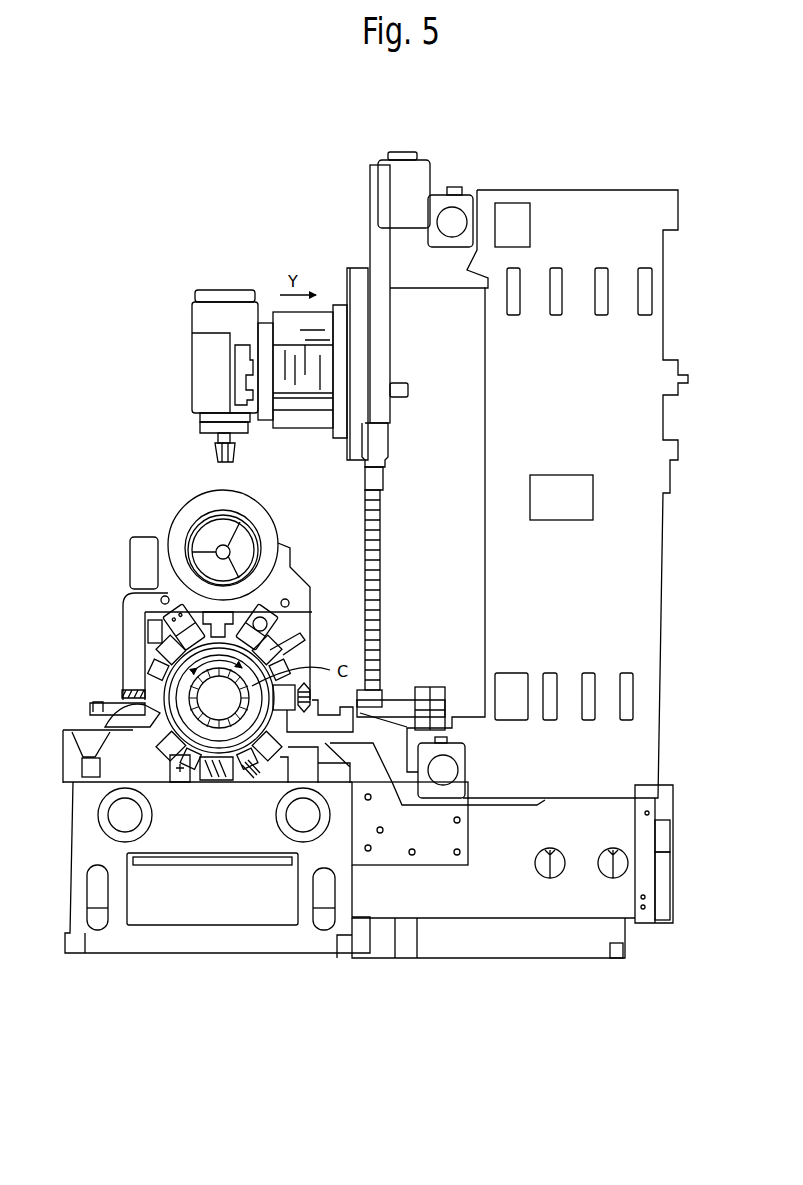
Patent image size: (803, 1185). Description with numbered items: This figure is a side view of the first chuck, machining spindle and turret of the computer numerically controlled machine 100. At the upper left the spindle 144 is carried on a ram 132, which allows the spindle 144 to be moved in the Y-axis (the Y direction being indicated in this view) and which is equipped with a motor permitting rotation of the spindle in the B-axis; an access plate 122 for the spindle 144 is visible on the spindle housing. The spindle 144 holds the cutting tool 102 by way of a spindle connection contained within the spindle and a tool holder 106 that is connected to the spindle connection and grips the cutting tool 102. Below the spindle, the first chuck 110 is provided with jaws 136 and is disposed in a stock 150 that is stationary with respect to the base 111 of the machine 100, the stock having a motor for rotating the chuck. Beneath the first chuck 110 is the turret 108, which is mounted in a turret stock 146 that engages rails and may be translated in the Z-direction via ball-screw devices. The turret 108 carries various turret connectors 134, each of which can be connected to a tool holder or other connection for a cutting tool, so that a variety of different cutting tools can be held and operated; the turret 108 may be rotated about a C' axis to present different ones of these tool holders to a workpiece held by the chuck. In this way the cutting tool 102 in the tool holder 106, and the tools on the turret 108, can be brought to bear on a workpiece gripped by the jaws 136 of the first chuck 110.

The computer numerically controlled machine 100 is at (487, 172).
The spindle 144 is at (202, 317).
The access plate 122 is at (245, 345).
The ram 132 is at (318, 350).
The tool holder 106 is at (217, 447).
The cutting tool 102 is at (238, 458).
The first chuck 110 is at (212, 503).
The jaws 136 is at (242, 533).
The stock 150 is at (163, 550).
The turret stock 146 is at (150, 630).
The turret connectors 134 is at (280, 647).
The turret 108 is at (215, 773).
The base 111 is at (80, 870).